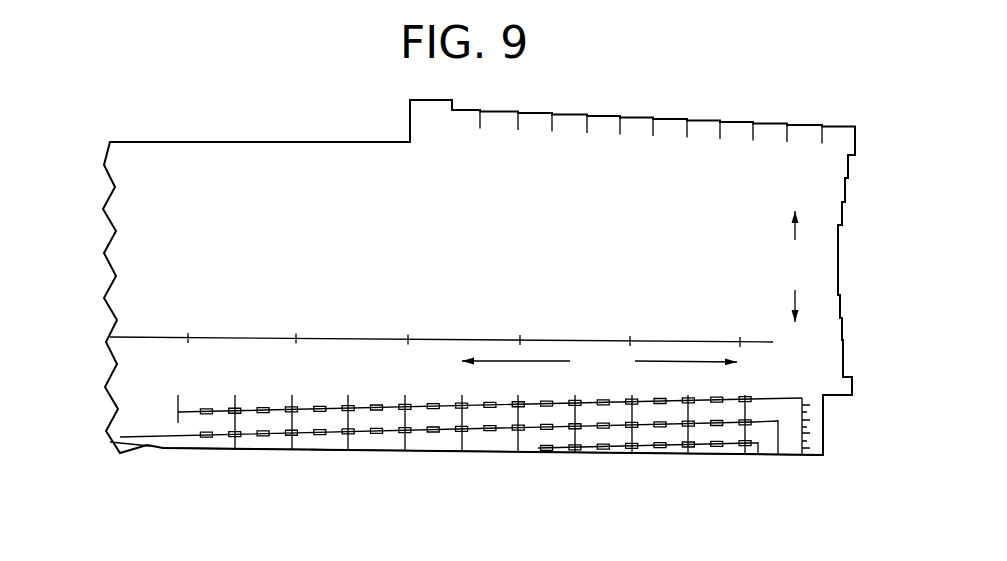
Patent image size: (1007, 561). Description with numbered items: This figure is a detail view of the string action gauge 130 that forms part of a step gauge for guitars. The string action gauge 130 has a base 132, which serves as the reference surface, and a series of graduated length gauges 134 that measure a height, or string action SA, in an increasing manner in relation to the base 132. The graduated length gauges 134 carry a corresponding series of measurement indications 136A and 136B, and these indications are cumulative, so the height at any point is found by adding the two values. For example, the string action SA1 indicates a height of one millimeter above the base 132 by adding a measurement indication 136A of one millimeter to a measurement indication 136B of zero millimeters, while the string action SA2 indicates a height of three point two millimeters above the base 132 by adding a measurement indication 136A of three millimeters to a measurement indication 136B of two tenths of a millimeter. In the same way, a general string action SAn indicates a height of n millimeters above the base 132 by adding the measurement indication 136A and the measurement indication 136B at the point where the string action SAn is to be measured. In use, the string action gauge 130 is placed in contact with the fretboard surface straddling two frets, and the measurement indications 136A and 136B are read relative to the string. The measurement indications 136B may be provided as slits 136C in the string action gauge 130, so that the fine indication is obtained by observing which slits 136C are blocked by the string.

The string action gauge 130 is at (461, 326).
The base 132 is at (525, 452).
The graduated length gauges 134 is at (433, 452).
The measurement indication 136A is at (738, 441).
The measurement indication 136B is at (715, 420).
The slits 136C is at (690, 398).
The string action SA1 is at (92, 383).
The string action SA2 is at (243, 450).
The string action SA is at (323, 450).
The string action SAn is at (757, 456).